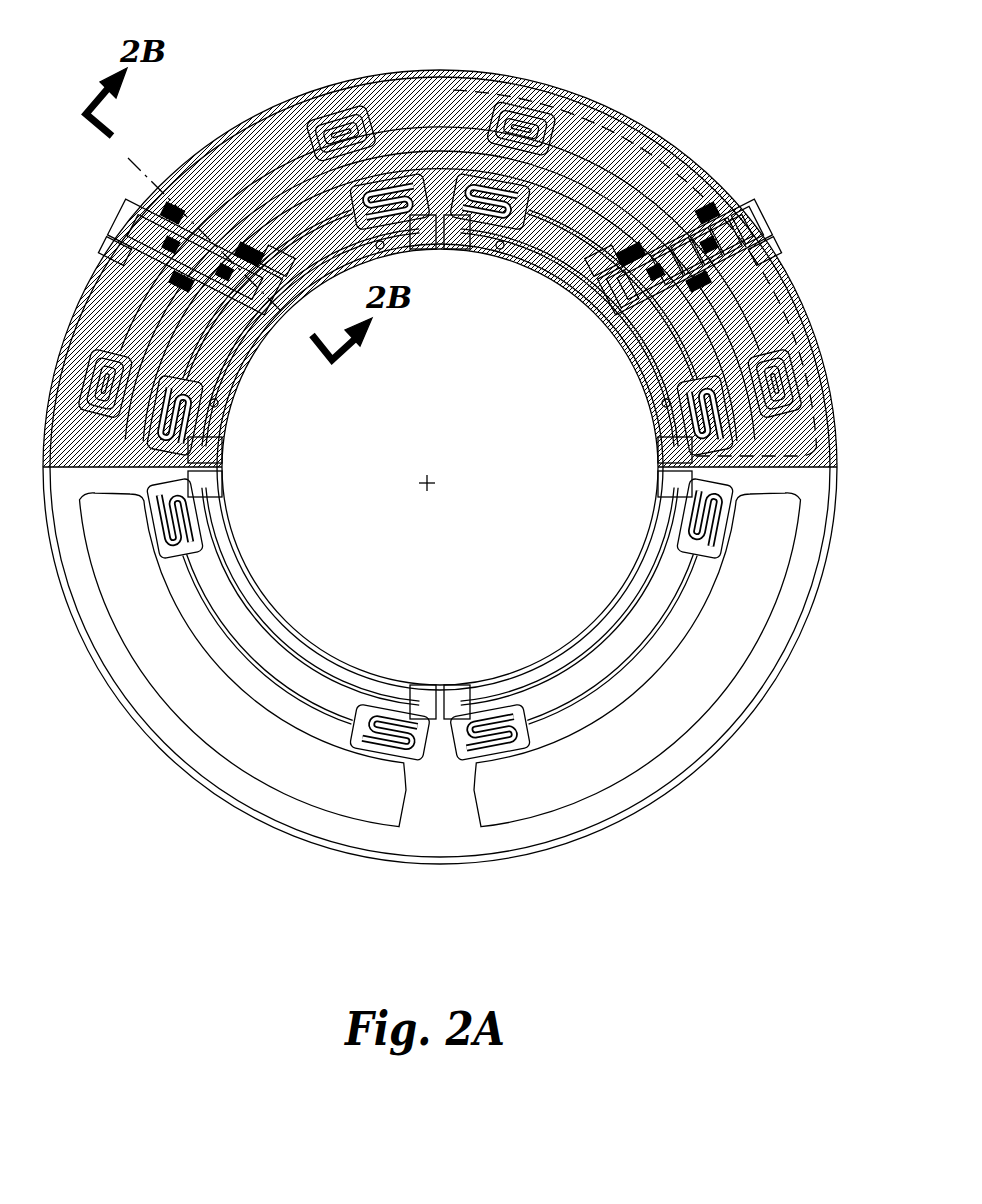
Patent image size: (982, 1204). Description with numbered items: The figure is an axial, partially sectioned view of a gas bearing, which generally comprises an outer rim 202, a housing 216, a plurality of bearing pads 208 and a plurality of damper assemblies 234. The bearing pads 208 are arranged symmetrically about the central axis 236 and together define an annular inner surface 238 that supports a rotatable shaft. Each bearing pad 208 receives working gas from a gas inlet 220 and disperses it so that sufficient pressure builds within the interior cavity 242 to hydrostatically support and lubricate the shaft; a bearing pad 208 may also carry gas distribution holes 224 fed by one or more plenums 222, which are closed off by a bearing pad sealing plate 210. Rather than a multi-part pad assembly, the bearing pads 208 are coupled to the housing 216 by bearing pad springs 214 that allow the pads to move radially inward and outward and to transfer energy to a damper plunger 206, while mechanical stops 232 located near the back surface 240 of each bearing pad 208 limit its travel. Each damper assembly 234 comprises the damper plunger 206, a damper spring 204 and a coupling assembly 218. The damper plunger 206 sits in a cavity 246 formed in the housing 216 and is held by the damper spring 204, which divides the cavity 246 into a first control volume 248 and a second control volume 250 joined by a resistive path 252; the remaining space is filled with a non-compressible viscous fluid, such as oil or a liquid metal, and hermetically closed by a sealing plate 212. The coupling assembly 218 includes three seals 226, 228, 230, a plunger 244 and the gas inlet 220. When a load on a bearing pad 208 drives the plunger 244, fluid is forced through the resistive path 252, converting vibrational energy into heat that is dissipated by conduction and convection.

The outer rim 202 is at (432, 82).
The damper spring 204 is at (342, 125).
The damper plunger 206 is at (295, 160).
The bearing pad 208 is at (653, 447).
The bearing pad sealing plate 210 is at (293, 647).
The sealing plate 212 is at (250, 777).
The bearing pad spring 214 is at (485, 728).
The housing 216 is at (217, 400).
The coupling assembly 218 is at (700, 150).
The gas inlet 220 is at (720, 187).
The plenum 222 is at (603, 307).
The gas distribution holes 224 is at (600, 300).
The seal 226 is at (740, 220).
The seal 228 is at (720, 273).
The seal 230 is at (620, 313).
The mechanical stop 232 is at (432, 207).
The damper assembly 234 is at (800, 345).
The central axis 236 is at (427, 485).
The annular inner surface 238 is at (285, 560).
The back surface 240 is at (440, 237).
The interior cavity 242 is at (447, 428).
The plunger 244 is at (603, 225).
The cavity 246 is at (590, 130).
The first control volume 248 is at (615, 140).
The second control volume 250 is at (567, 187).
The resistive path 252 is at (535, 118).